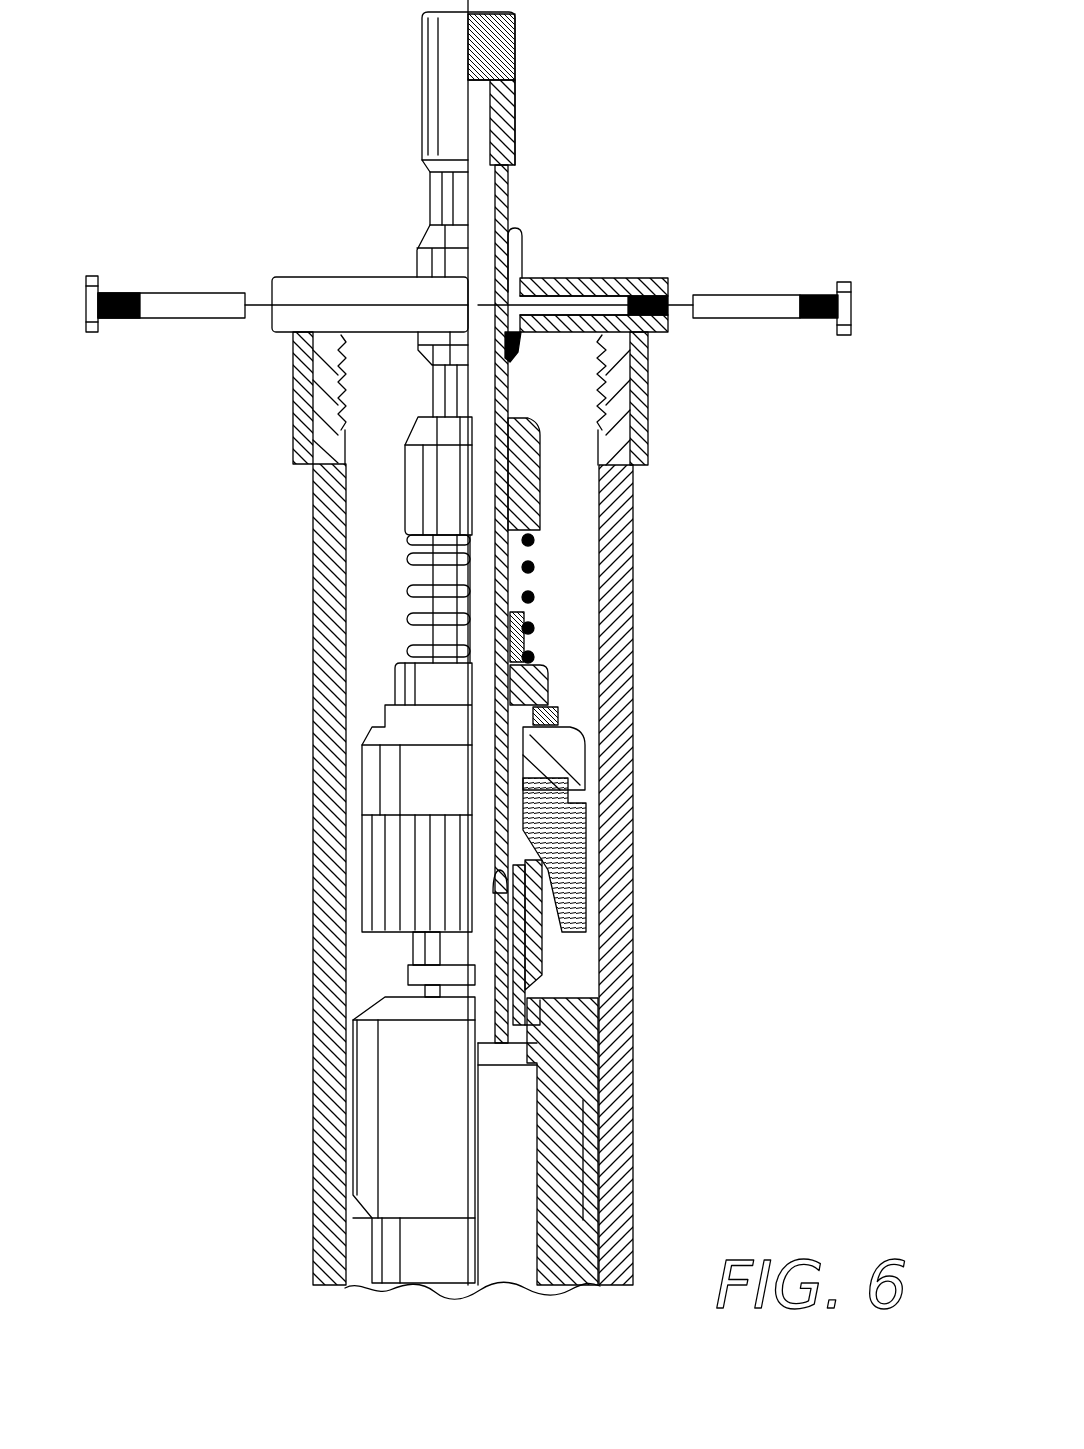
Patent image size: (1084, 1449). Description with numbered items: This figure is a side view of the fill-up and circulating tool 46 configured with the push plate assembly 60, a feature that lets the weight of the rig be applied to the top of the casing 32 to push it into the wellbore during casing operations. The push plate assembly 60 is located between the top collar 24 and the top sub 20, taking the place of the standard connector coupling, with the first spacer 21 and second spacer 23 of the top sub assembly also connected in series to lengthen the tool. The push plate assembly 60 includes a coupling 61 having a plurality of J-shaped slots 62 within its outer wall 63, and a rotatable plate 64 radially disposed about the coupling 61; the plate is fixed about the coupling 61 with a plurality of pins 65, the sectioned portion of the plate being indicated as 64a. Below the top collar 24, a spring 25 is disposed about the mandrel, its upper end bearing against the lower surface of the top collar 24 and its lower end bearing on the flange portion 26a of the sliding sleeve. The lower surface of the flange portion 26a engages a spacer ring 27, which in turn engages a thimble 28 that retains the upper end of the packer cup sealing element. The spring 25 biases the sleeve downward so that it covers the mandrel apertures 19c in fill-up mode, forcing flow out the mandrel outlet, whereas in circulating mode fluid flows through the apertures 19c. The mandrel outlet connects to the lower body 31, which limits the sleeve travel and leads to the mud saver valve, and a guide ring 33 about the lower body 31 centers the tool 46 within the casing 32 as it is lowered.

The top sub 20 is at (505, 85).
The first spacer 21 is at (510, 195).
The push plate assembly 60 is at (352, 262).
The outer wall 63 is at (420, 250).
The J-shaped slots 62 is at (522, 270).
The rotatable plate 64 is at (297, 283).
The cross bar section 64a is at (667, 283).
The pins 65 is at (178, 300).
The coupling 61 is at (507, 340).
The second spacer 23 is at (438, 395).
The top collar 24 is at (545, 480).
The spring 25 is at (405, 598).
The fill-up and circulating tool 46 is at (380, 632).
The flange portion 26a is at (548, 680).
The spacer ring 27 is at (600, 745).
The thimble 28 is at (600, 795).
The casing 32 is at (620, 905).
The apertures 19c is at (523, 930).
The lower body 31 is at (567, 997).
The guide ring 33 is at (590, 1137).